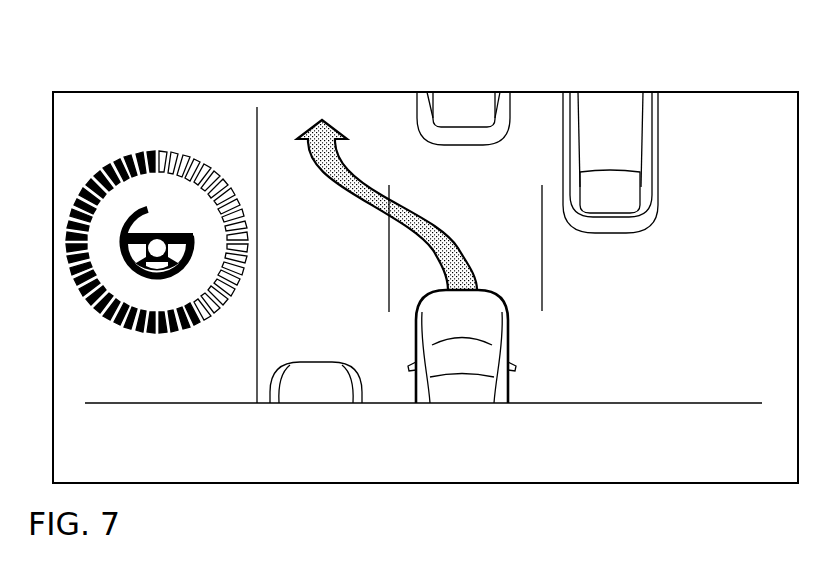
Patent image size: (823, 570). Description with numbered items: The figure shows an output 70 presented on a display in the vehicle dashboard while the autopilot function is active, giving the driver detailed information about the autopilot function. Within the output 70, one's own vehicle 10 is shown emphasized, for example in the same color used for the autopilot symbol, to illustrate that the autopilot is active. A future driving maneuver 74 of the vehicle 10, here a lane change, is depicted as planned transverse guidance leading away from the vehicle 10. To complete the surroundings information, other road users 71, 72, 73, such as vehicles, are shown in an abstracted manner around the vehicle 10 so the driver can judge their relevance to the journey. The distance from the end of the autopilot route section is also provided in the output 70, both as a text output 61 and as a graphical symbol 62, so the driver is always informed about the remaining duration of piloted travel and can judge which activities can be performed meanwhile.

The output 70 is at (172, 86).
The graphical symbol 62 is at (107, 154).
The future driving maneuver 74 is at (375, 198).
The vehicle 10 is at (487, 328).
The other road user 71 is at (477, 138).
The other road user 72 is at (638, 220).
The other road user 73 is at (303, 372).
The text output 61 is at (685, 445).